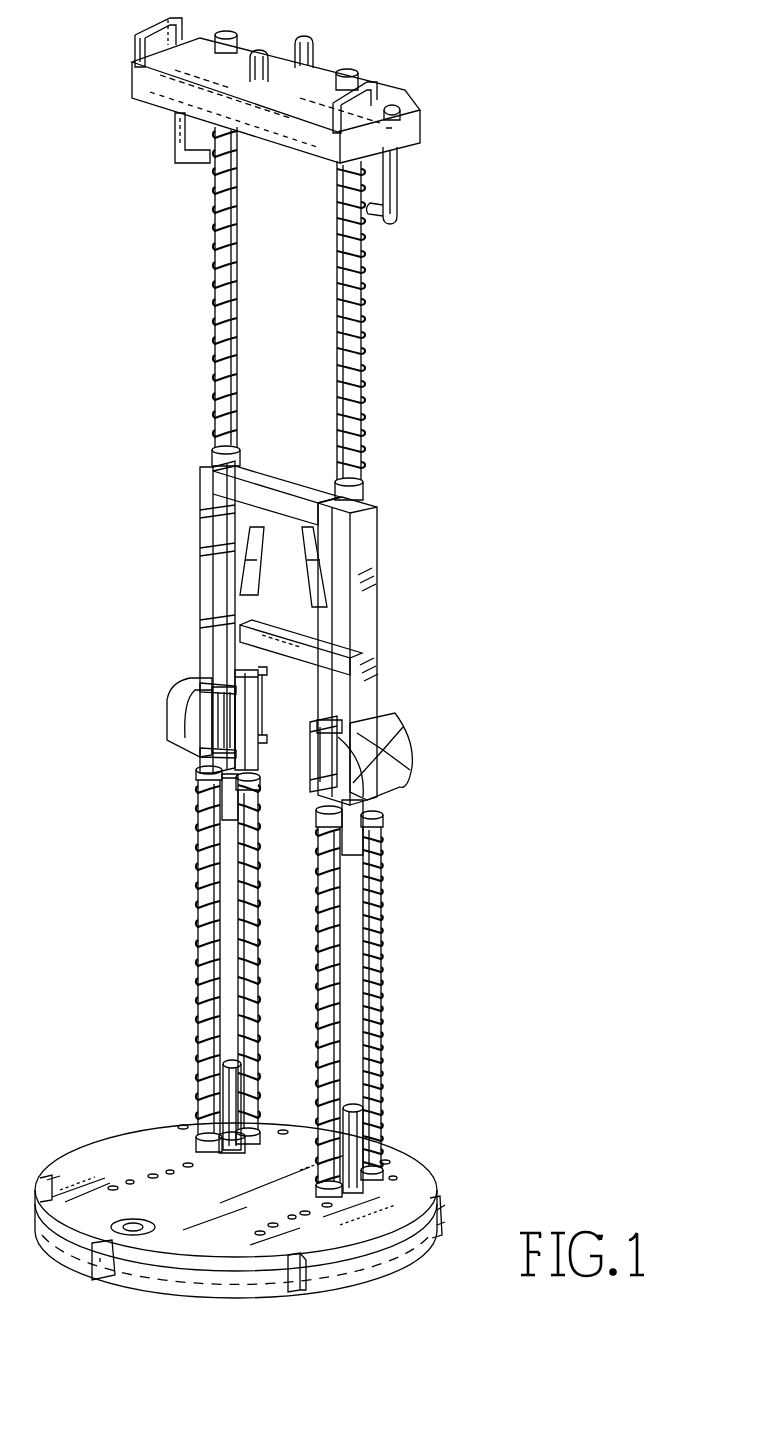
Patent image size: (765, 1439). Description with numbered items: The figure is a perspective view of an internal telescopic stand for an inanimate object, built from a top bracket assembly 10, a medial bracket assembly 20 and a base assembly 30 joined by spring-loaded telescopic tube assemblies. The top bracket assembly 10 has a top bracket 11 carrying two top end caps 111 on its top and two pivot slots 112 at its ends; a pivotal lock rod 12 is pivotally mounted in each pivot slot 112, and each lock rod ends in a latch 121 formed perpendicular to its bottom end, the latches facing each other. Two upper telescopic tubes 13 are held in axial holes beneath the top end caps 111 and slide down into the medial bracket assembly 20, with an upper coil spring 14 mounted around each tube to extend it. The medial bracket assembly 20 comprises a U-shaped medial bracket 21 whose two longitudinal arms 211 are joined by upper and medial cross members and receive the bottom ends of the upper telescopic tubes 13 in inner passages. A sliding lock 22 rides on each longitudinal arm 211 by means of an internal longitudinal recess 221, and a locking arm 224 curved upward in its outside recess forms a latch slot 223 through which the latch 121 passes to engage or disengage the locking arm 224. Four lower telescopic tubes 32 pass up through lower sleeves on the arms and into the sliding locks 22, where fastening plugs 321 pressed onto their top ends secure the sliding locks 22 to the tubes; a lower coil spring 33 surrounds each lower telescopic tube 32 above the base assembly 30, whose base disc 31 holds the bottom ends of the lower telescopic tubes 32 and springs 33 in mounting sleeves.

The top bracket assembly 10 is at (425, 61).
The top bracket 11 is at (255, 49).
The top end cap 111 is at (349, 80).
The pivot slot 112 is at (398, 115).
The pivotal lock rod 12 is at (398, 182).
The latch 121 is at (366, 213).
The upper telescopic tube 13 is at (353, 305).
The upper coil spring 14 is at (354, 338).
The medial bracket assembly 20 is at (402, 503).
The U-shaped medial bracket 21 is at (274, 481).
The longitudinal arm 211 is at (373, 612).
The sliding lock 22 is at (176, 720).
The internal longitudinal recess 221 is at (380, 713).
The latch slot 223 is at (404, 779).
The locking arm 224 is at (404, 753).
The base assembly 30 is at (415, 944).
The base disc 31 is at (115, 1150).
The lower telescopic tube 32 is at (204, 913).
The fastening plug 321 is at (203, 685).
The lower coil spring 33 is at (204, 861).